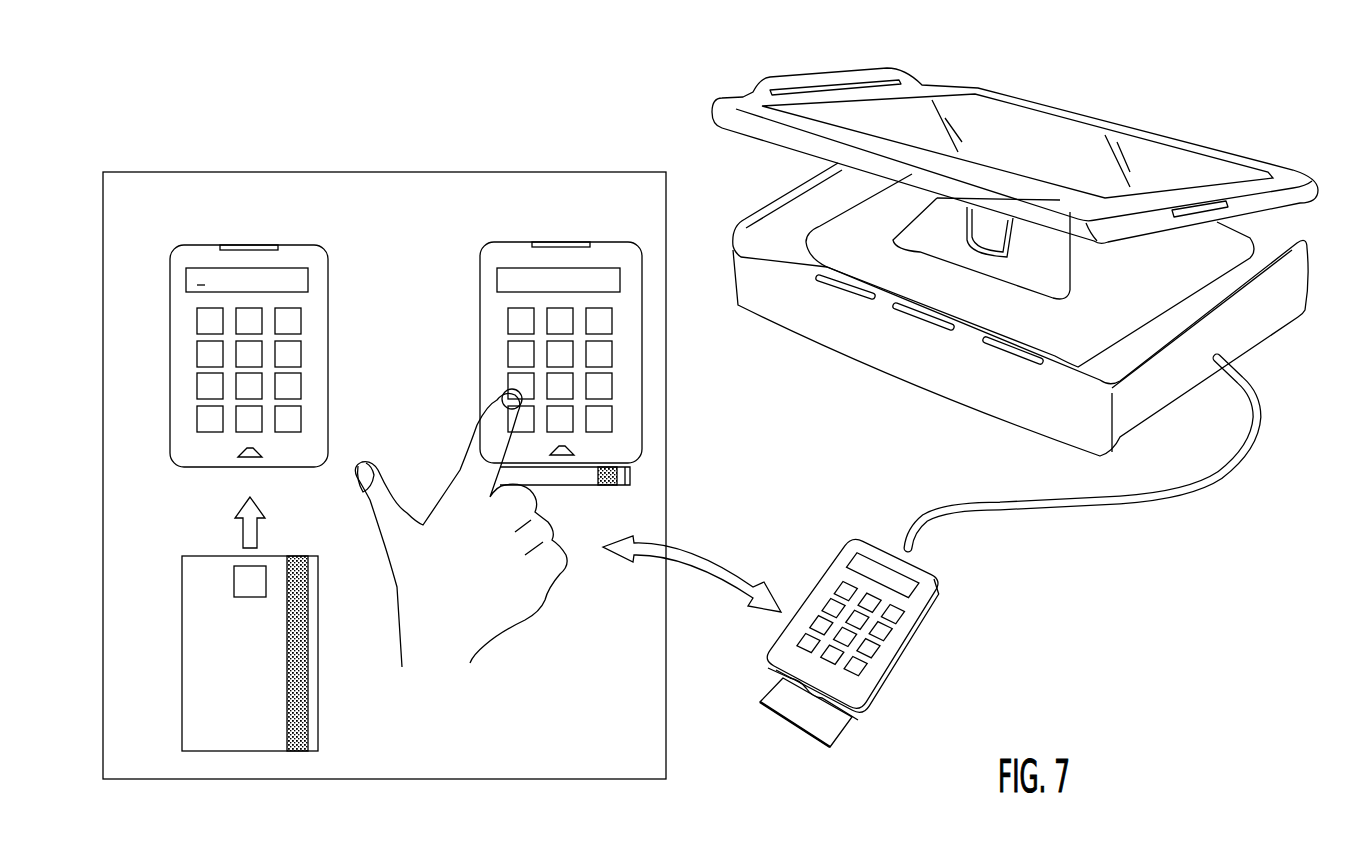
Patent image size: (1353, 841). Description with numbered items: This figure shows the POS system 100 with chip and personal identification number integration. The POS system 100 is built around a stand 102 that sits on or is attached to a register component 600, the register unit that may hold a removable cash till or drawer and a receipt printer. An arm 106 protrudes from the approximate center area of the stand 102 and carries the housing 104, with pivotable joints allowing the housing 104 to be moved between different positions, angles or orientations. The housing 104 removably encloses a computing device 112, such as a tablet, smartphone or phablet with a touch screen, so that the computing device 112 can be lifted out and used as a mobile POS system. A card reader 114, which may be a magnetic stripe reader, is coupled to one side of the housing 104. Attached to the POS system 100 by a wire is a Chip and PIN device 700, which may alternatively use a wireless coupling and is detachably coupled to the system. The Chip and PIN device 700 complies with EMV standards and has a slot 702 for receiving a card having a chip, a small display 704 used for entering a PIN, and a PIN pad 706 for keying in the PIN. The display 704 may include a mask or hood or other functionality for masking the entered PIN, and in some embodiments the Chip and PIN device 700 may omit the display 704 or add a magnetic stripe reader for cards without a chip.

The POS system 100 is at (252, 109).
The stand 102 is at (885, 231).
The housing 104 is at (763, 130).
The arm 106 is at (1047, 274).
The computing device 112 is at (1013, 118).
The card reader 114 is at (821, 72).
The register component 600 is at (765, 305).
The Chip and PIN device 700 is at (196, 246).
The slot 702 is at (247, 468).
The display 704 is at (305, 279).
The PIN pad 706 is at (198, 350).